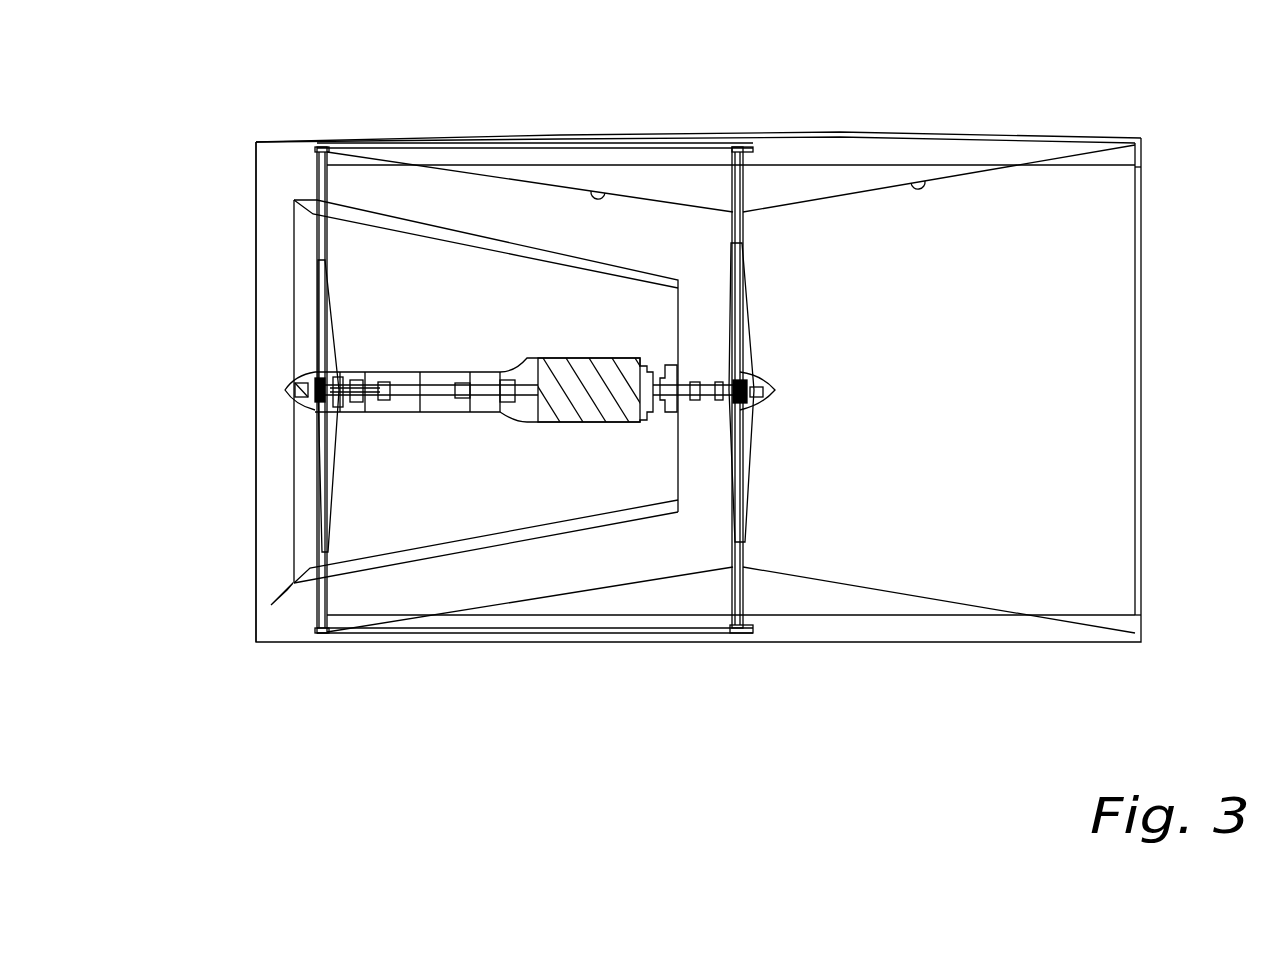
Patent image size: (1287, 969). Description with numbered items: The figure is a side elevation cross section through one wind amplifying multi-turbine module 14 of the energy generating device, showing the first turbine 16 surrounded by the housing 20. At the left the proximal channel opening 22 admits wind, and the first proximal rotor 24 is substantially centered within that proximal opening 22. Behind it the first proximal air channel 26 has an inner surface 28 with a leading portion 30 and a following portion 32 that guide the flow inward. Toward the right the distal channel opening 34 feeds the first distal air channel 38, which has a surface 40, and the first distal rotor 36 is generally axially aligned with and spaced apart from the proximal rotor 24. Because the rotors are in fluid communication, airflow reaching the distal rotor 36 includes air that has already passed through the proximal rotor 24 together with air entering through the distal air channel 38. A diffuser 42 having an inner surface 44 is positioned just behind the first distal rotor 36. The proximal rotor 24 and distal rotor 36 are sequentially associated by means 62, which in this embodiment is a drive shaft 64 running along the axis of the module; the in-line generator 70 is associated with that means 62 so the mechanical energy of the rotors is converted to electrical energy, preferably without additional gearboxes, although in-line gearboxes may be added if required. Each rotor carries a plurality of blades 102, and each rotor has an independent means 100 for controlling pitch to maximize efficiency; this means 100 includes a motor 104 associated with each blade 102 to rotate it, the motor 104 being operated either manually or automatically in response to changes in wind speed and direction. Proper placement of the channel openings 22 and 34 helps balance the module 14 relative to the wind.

The wind amplifying multi-turbine module 14 is at (463, 745).
The first turbine 16 is at (295, 583).
The housing 20 is at (731, 142).
The proximal channel opening 22 is at (377, 522).
The first proximal rotor 24 is at (315, 283).
The first proximal air channel 26 is at (490, 275).
The inner surface 28 is at (433, 228).
The leading portion 30 is at (257, 143).
The following portion 32 is at (295, 200).
The distal channel opening 34 is at (292, 165).
The first distal rotor 36 is at (760, 377).
The first distal air channel 38 is at (553, 207).
The surface 40 is at (603, 197).
The diffuser 42 is at (1013, 168).
The inner surface 44 is at (940, 178).
The means for sequentially associating rotors 62 is at (613, 423).
The drive shaft 64 is at (687, 408).
The in-line generator 70 is at (585, 365).
The means for controlling pitch 100 is at (757, 410).
The blade 102 is at (317, 463).
The motor 104 is at (753, 418).